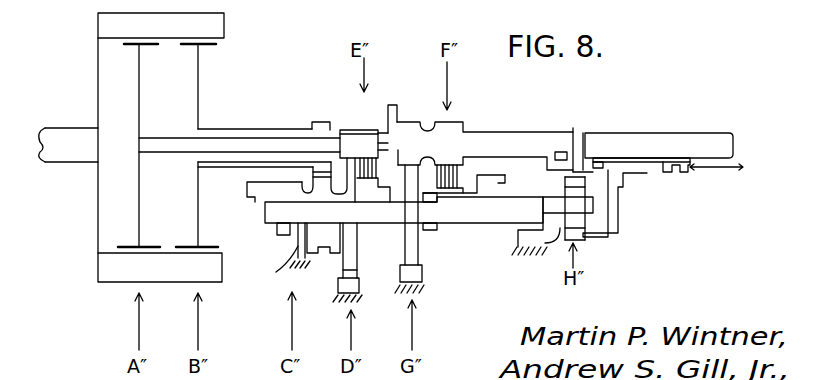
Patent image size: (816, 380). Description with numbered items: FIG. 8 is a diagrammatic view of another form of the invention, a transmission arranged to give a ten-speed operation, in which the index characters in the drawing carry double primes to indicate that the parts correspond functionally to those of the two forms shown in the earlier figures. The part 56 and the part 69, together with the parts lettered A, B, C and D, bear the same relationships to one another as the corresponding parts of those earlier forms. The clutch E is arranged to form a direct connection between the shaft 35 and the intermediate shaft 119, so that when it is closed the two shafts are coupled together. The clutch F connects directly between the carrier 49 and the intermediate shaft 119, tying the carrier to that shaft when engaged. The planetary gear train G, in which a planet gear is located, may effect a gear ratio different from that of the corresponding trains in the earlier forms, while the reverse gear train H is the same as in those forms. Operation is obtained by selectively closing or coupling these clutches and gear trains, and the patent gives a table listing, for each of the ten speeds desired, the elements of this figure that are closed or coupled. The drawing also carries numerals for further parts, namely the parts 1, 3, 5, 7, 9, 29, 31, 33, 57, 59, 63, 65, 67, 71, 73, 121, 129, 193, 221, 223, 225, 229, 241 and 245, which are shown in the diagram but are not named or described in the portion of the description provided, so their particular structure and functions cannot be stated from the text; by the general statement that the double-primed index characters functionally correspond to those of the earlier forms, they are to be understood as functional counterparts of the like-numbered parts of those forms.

The input shaft 1 is at (61, 153).
The output shaft 3 is at (722, 133).
The support bracket 5 is at (536, 242).
The housing 7 is at (97, 233).
The housing flange 9 is at (124, 279).
The second disk 29 is at (198, 220).
The sleeve shaft 31 is at (224, 163).
The first disk 33 is at (139, 215).
The shaft 35 is at (168, 143).
The carrier 49 is at (478, 193).
The part 56 is at (345, 130).
The pawl 57 is at (285, 212).
The stop 59 is at (272, 243).
The support 63 is at (358, 250).
The clutch member 65 is at (373, 128).
The bracket 67 is at (325, 248).
The part 69 is at (313, 122).
The lever 71 is at (298, 249).
The link 73 is at (277, 269).
The intermediate shaft 119 is at (522, 136).
The bar 121 is at (388, 187).
The support 129 is at (413, 248).
The collar 193 is at (411, 122).
The plate 221 is at (577, 133).
The gear stack 223 is at (580, 237).
The bracket 225 is at (622, 208).
The coupling 229 is at (667, 170).
The clutch 241 is at (405, 185).
The shaft 245 is at (547, 208).